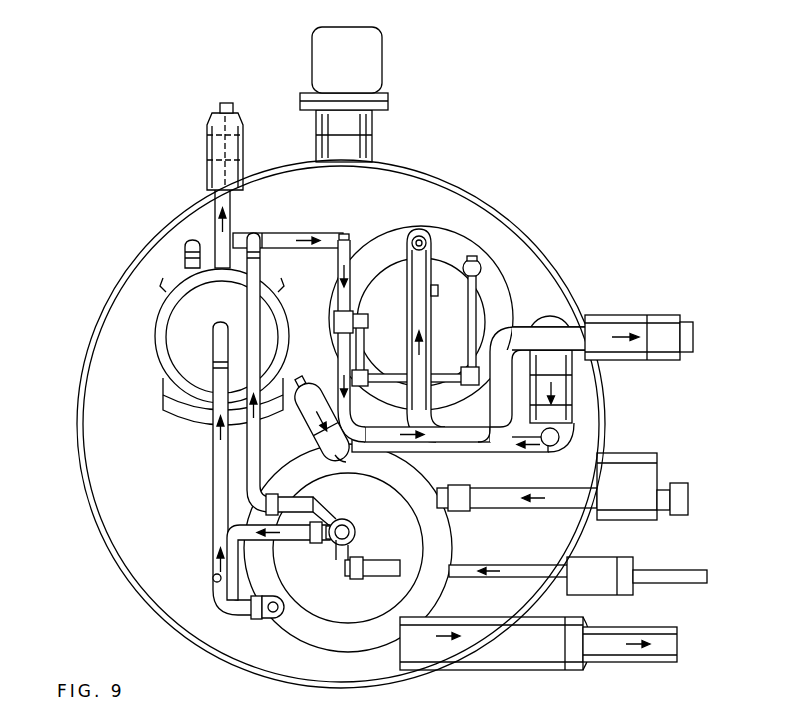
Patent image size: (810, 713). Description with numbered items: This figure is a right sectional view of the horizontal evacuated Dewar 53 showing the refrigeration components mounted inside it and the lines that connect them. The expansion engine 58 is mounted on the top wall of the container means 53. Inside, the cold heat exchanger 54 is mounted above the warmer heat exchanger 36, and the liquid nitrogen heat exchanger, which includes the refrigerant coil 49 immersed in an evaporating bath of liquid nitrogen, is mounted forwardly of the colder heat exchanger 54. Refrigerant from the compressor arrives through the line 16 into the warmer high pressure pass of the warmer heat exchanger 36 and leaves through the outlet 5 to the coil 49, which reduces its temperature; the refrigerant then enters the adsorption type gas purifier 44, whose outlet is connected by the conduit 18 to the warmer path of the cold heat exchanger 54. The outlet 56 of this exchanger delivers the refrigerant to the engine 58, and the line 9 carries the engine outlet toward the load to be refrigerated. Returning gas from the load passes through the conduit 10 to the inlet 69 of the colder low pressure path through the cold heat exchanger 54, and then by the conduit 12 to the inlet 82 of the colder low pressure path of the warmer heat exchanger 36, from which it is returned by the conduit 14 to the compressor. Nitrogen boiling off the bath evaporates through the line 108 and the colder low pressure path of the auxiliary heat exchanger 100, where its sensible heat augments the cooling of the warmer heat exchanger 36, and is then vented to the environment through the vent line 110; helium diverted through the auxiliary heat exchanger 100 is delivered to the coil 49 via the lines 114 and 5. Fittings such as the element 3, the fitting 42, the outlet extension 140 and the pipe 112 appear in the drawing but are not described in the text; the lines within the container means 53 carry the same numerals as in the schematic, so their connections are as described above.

The vent line 110 is at (225, 103).
The expansion engine 58 is at (385, 72).
The conduit 18 is at (289, 233).
The inlet of colder low pressure path 69 is at (414, 237).
The cold heat exchanger 54 is at (452, 228).
The conduit 10 is at (432, 255).
The outlet of cold heat exchanger 56 is at (481, 262).
The pipe 3 is at (477, 292).
The line 9 is at (516, 326).
The discharge line 140 is at (657, 308).
The coil 49 is at (167, 352).
The gas purifier 44 is at (165, 400).
The outlet of warmer path 5 is at (213, 433).
The conduit 12 is at (306, 392).
The line 108 is at (262, 460).
The inlet of colder low pressure path 82 is at (347, 456).
The line 16 is at (470, 488).
The auxiliary heat exchanger 100 is at (362, 528).
The line 114 is at (297, 545).
The evacuated Dewar 53 is at (73, 514).
The pipe 112 is at (463, 565).
The return bend 42 is at (287, 611).
The warmer heat exchanger 36 is at (306, 652).
The conduit 14 is at (438, 657).